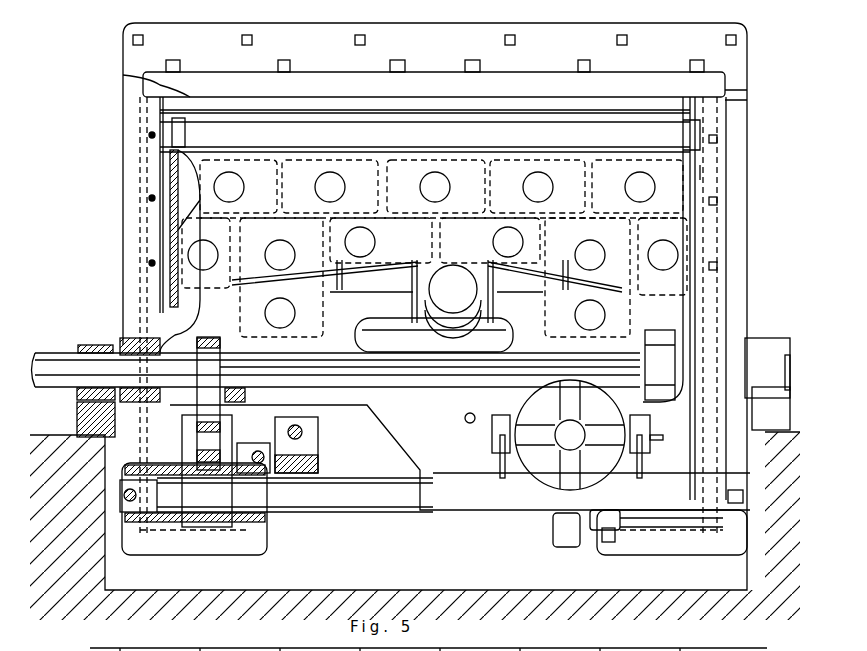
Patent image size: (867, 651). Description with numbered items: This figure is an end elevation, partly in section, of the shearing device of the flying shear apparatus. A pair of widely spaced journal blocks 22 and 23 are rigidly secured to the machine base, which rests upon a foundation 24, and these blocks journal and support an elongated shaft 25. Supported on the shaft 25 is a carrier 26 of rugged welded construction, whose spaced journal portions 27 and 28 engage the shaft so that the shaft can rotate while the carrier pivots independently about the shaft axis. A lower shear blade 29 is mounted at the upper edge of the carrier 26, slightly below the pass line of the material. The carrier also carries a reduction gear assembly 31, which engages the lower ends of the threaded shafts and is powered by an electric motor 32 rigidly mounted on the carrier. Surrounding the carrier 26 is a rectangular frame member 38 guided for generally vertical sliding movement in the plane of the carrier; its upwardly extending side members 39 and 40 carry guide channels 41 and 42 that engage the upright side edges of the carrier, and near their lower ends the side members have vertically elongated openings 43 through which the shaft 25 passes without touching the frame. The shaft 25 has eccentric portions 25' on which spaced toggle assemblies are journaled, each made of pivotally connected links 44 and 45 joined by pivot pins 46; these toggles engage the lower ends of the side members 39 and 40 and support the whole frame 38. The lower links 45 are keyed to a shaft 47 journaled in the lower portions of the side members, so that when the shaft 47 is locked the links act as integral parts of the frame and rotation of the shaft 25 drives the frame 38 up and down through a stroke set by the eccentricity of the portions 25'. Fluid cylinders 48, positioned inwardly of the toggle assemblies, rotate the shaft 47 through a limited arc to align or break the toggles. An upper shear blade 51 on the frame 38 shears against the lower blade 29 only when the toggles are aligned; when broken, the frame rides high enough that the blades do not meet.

The journal block 22 is at (95, 345).
The journal block 23 is at (760, 343).
The foundation 24 is at (290, 590).
The shaft 25 is at (336, 358).
The eccentric portions 25' is at (397, 373).
The carrier 26 is at (663, 198).
The journal portion 27 is at (125, 335).
The journal portion 28 is at (245, 390).
The shear blade 29 is at (663, 140).
The reduction gear assembly 31 is at (388, 345).
The electric motor 32 is at (445, 275).
The frame member 38 is at (318, 45).
The side member 39 is at (130, 230).
The side member 40 is at (735, 252).
The guide channel 41 is at (168, 148).
The guide channel 42 is at (722, 173).
The vertically elongated opening 43 is at (150, 422).
The toggle link 44 is at (215, 445).
The toggle link 45 is at (215, 517).
The pivot pin 46 is at (210, 445).
The shaft 47 is at (374, 505).
The fluid cylinder 48 is at (540, 465).
The shear blade 51 is at (425, 110).